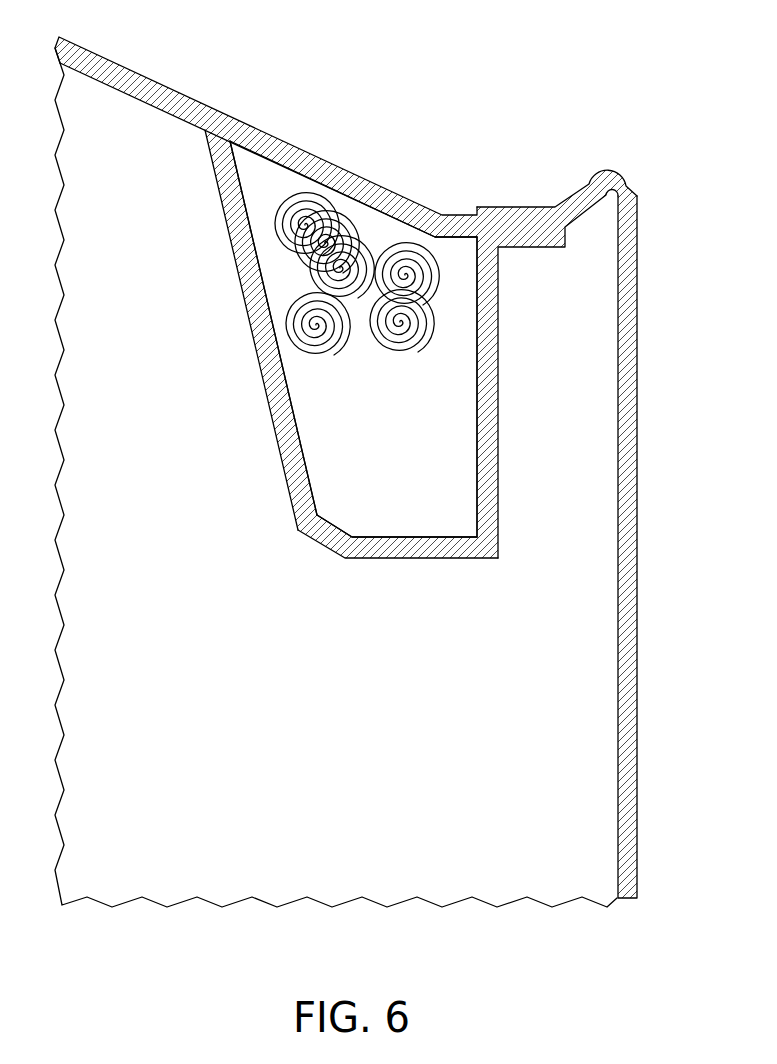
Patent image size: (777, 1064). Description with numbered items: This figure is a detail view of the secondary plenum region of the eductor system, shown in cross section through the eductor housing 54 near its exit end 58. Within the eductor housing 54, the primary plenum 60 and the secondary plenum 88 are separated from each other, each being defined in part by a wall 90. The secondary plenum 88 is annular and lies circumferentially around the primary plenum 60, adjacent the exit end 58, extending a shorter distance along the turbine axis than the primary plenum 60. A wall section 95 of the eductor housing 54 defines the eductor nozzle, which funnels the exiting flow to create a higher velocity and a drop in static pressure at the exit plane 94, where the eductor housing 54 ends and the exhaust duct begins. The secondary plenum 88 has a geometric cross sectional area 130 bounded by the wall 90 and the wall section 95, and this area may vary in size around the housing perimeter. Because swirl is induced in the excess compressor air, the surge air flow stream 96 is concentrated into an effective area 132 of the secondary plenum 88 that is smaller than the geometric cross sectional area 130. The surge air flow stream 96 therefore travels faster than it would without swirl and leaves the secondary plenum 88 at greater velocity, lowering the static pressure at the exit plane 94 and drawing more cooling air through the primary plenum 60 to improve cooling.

The eductor housing 54 is at (115, 77).
The wall section 95 is at (290, 158).
The exit end 58 is at (628, 193).
The surge air flow stream 96 is at (273, 267).
The effective area 132 is at (445, 323).
The secondary plenum 88 is at (312, 402).
The wall 90 is at (290, 465).
The geometric cross sectional area 130 is at (382, 493).
The exit plane 94 is at (628, 543).
The primary plenum 60 is at (262, 757).